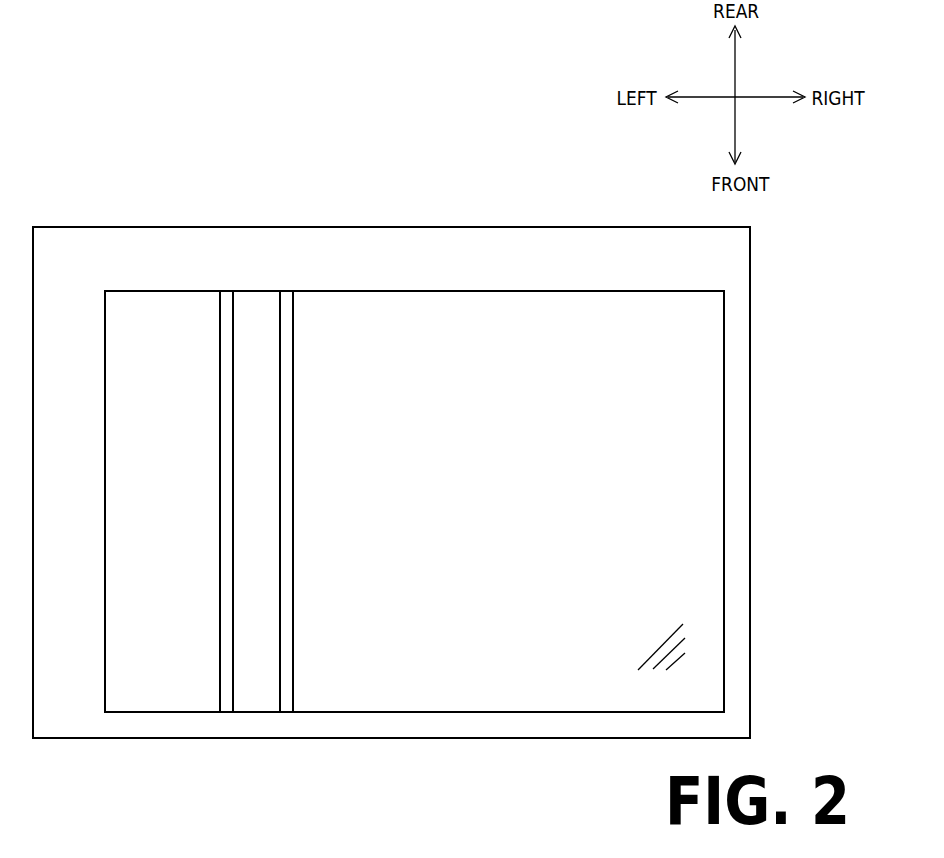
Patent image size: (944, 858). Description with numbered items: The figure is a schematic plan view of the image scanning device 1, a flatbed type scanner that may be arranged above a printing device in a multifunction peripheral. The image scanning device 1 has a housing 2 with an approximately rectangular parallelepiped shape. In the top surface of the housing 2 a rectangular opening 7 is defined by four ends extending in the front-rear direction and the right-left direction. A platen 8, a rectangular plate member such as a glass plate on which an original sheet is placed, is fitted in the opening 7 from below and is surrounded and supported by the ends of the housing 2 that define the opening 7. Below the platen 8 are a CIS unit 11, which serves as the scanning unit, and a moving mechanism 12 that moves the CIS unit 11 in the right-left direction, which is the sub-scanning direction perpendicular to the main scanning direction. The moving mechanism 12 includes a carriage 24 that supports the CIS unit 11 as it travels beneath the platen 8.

The image scanning device 1 is at (359, 196).
The housing 2 is at (582, 739).
The opening 7 is at (482, 292).
The platen 8 is at (697, 567).
The CIS unit 11 is at (280, 670).
The moving mechanism 12 is at (208, 667).
The carriage 24 is at (226, 695).